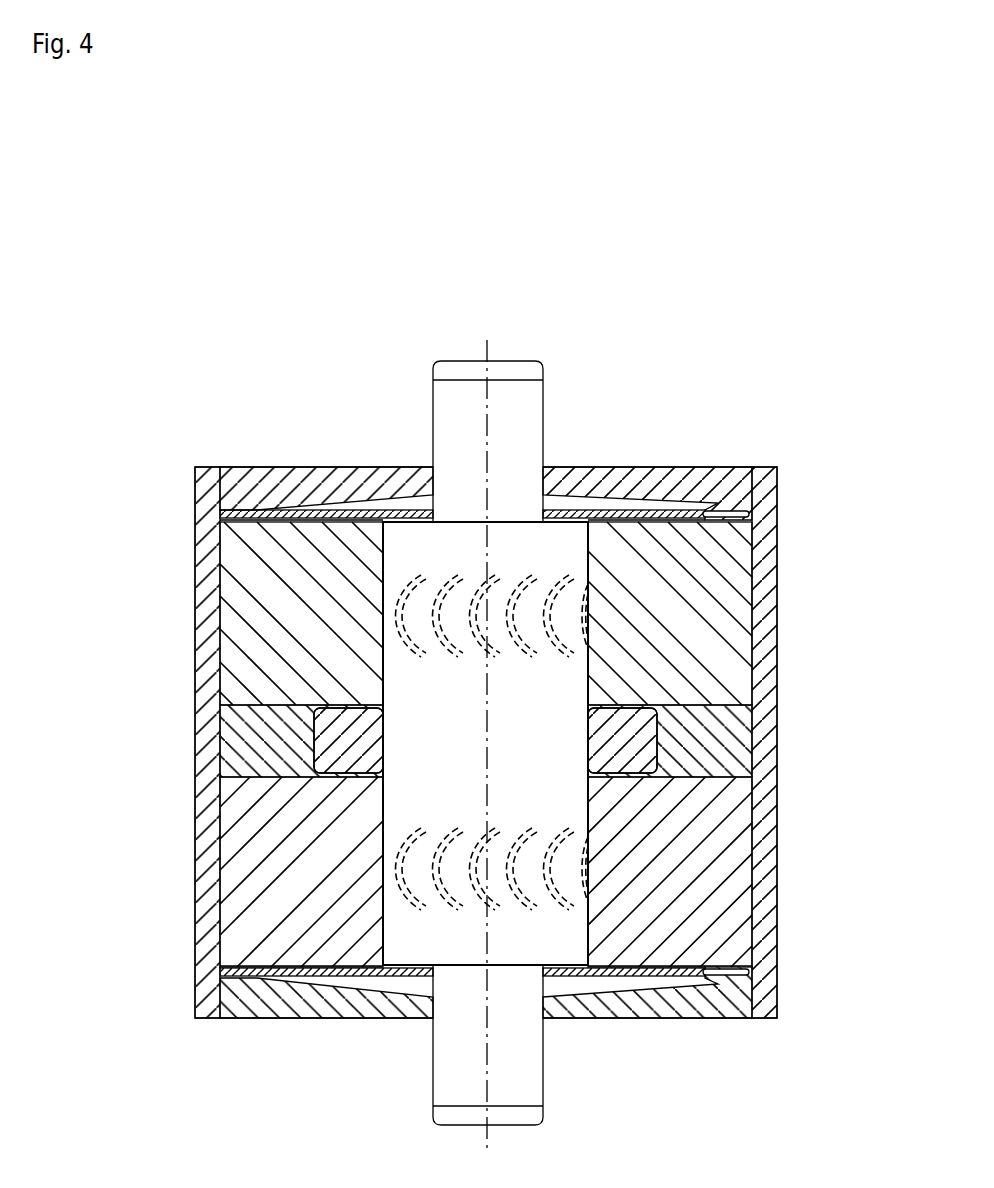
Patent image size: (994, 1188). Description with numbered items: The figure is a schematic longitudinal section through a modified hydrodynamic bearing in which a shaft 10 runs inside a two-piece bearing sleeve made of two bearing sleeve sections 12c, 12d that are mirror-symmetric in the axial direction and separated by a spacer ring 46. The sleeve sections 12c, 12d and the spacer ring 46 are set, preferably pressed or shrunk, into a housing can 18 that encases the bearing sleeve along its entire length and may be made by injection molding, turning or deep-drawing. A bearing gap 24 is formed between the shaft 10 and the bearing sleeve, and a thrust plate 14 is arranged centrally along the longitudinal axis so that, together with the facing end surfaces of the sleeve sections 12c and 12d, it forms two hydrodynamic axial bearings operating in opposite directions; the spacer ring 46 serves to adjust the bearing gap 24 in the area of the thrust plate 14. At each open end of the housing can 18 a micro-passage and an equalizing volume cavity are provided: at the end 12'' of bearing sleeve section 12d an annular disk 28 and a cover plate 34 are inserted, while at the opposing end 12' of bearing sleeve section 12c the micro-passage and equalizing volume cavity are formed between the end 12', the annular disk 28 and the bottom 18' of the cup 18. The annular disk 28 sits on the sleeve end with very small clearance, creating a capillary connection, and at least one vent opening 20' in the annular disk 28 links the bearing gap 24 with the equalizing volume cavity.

The shaft 10 is at (513, 425).
The housing can 18 is at (485, 628).
The bottom of the cup 18' is at (326, 374).
The vent opening 20' is at (657, 379).
The annular disk 28 is at (638, 512).
The bearing gap 24 is at (590, 605).
The end of the bearing sleeve section 12' is at (416, 543).
The end of the bearing sleeve section 12'' is at (416, 942).
The bearing sleeve section 12c is at (313, 683).
The bearing sleeve section 12d is at (718, 835).
The spacer ring 46 is at (297, 743).
The thrust plate 14 is at (635, 723).
The cover plate 34 is at (300, 1018).